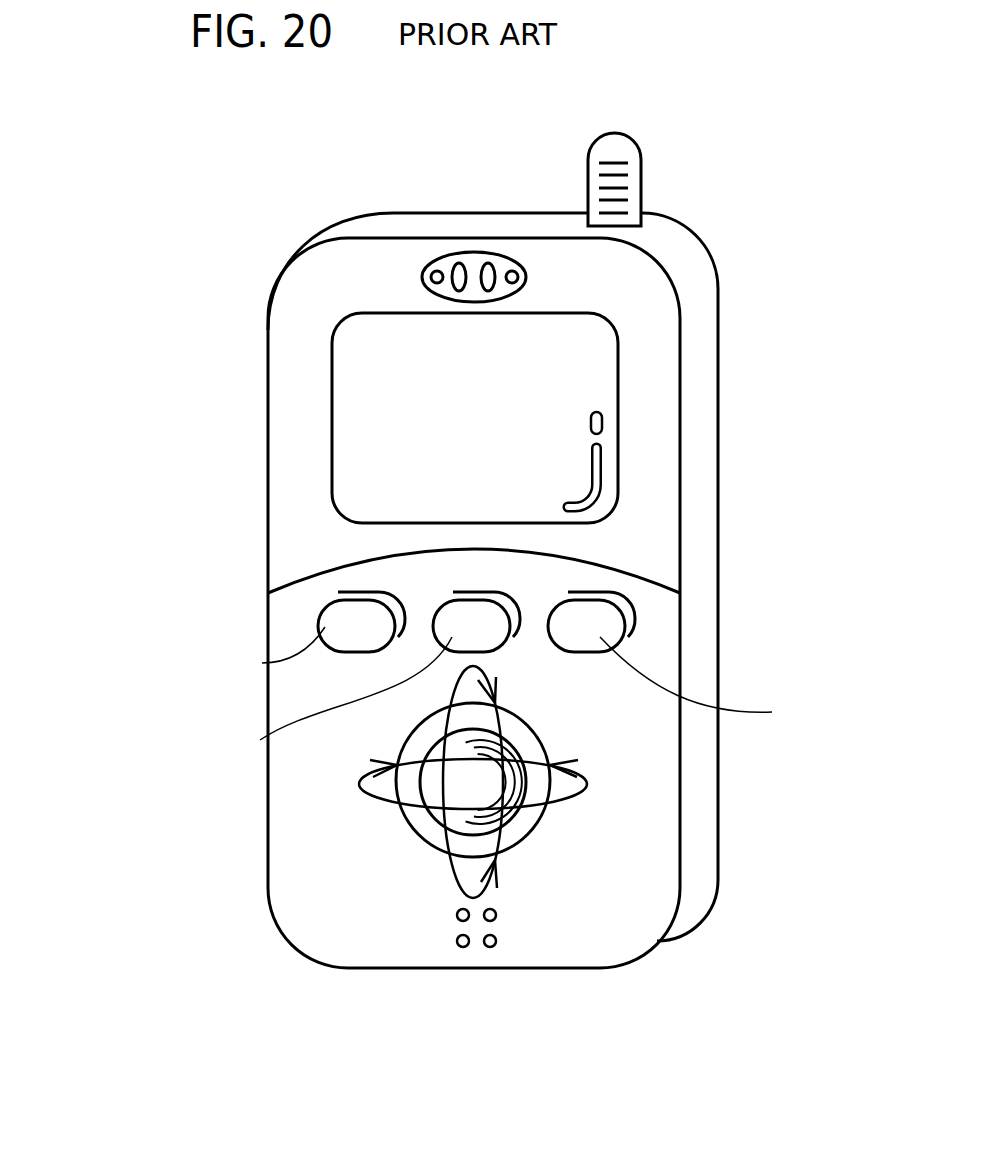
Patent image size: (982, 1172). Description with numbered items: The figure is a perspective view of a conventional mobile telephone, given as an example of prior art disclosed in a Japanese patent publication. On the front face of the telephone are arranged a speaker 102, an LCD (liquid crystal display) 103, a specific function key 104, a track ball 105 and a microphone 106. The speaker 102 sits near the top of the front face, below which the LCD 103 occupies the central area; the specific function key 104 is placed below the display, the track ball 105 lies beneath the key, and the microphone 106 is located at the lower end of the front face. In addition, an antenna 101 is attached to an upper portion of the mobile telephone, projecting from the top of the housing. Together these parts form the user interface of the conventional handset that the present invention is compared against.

The antenna 101 is at (625, 150).
The speaker 102 is at (445, 268).
The LCD 103 is at (388, 406).
The specific function key 104 is at (637, 617).
The track ball 105 is at (537, 828).
The microphone 106 is at (462, 947).